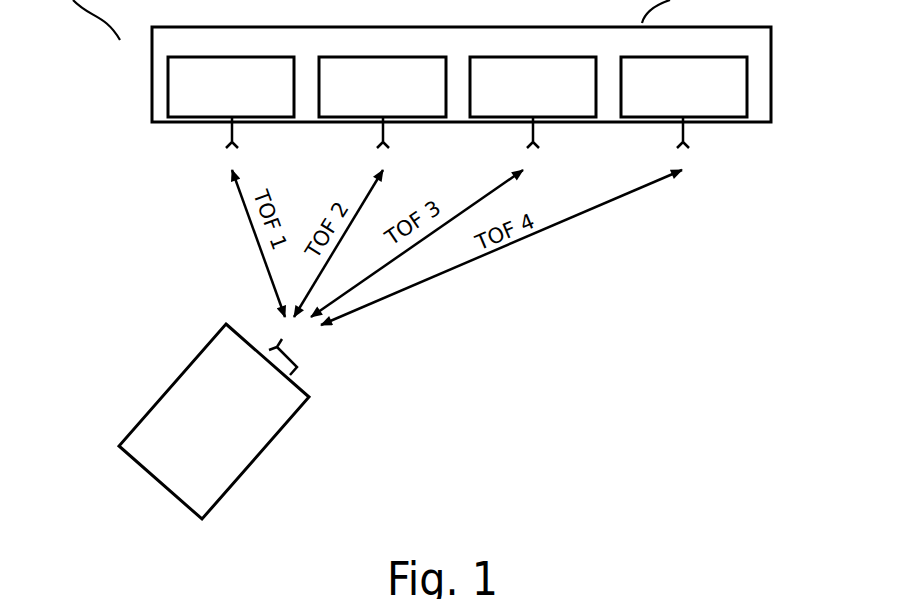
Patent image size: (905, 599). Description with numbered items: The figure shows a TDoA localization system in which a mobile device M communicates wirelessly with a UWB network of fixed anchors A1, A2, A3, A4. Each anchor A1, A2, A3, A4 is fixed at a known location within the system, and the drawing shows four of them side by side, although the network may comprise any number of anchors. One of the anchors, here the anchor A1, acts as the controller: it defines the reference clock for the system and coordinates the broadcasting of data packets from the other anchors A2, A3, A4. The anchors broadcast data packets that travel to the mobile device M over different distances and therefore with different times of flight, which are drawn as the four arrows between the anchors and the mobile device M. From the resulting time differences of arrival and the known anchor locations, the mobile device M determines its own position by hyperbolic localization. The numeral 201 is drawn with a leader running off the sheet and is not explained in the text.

The anchor A1 is at (231, 102).
The anchor A2 is at (382, 102).
The anchor A3 is at (533, 102).
The anchor A4 is at (684, 102).
The mobile device M is at (267, 445).
The positioning system 201 is at (760, 598).